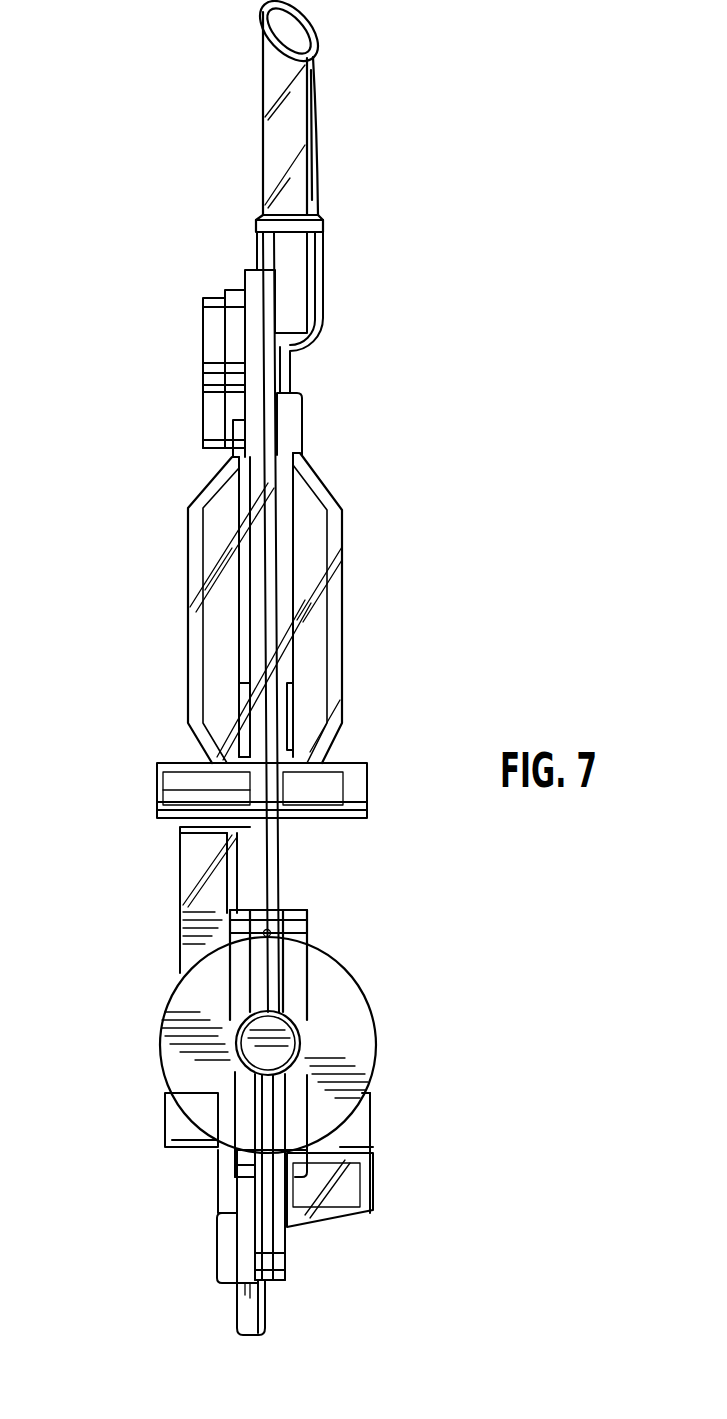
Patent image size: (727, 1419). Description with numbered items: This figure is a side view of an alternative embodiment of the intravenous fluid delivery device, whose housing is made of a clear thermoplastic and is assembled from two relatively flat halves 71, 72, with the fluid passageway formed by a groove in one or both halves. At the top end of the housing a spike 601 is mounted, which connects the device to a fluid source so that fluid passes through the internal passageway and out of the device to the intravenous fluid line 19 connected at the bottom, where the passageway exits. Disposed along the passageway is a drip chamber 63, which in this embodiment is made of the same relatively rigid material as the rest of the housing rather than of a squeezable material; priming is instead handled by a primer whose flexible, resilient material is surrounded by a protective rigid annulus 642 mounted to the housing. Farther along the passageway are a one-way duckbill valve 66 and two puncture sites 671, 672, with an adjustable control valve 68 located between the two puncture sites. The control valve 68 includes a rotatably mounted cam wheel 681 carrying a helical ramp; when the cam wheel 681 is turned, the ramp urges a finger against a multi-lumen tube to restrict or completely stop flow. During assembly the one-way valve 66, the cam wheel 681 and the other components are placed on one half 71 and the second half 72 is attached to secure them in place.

The spike 601 is at (318, 155).
The first flat half 71 is at (193, 492).
The second flat half 72 is at (330, 490).
The drip chamber 63 is at (342, 608).
The puncture site 672 is at (157, 767).
The protective rigid annulus 642 is at (183, 908).
The cam wheel 681 is at (353, 970).
The adjustable control valve 68 is at (423, 1048).
The puncture site 671 is at (165, 1112).
The one-way duckbill valve 66 is at (380, 1170).
The intravenous fluid line 19 is at (267, 1303).